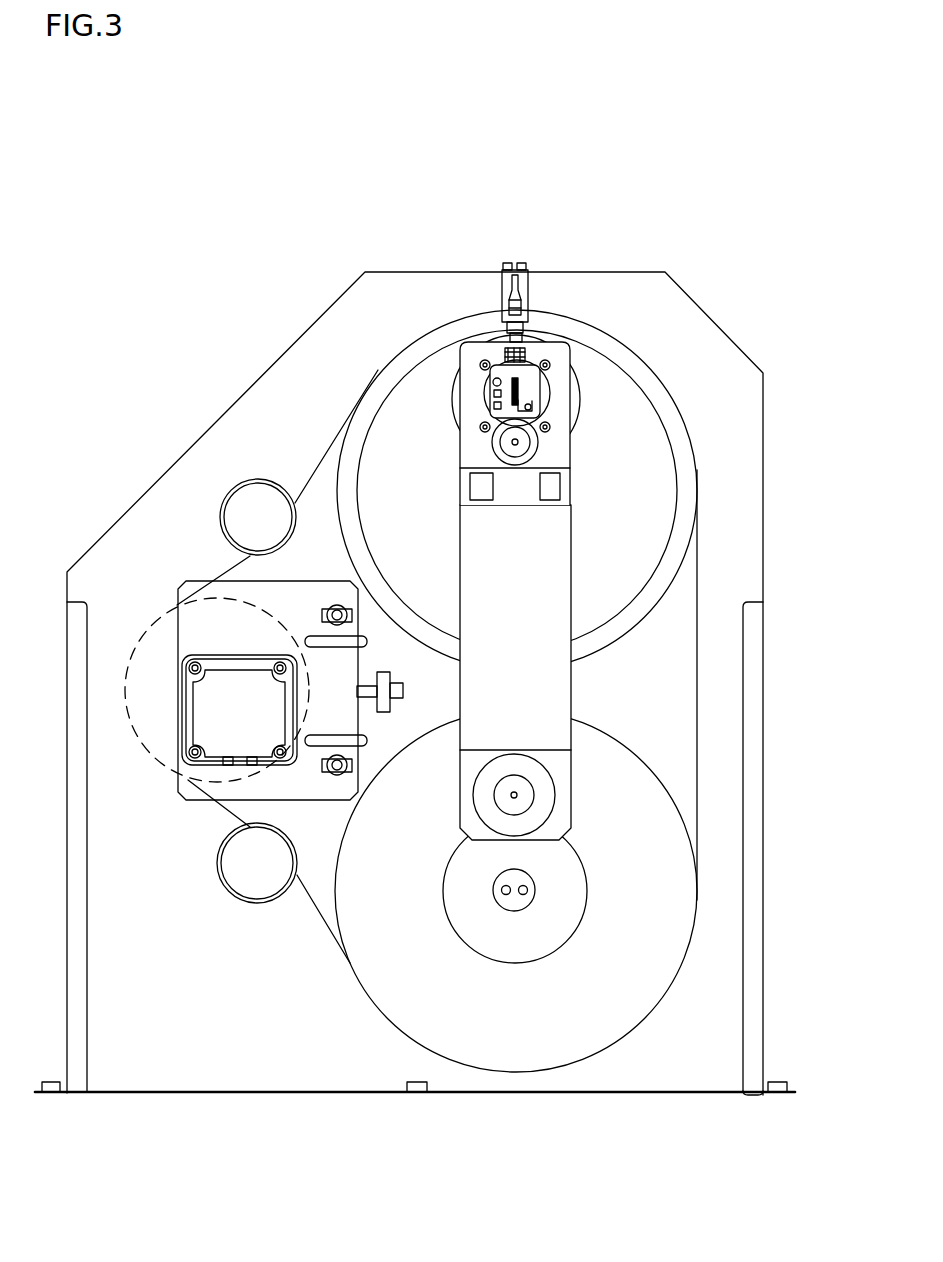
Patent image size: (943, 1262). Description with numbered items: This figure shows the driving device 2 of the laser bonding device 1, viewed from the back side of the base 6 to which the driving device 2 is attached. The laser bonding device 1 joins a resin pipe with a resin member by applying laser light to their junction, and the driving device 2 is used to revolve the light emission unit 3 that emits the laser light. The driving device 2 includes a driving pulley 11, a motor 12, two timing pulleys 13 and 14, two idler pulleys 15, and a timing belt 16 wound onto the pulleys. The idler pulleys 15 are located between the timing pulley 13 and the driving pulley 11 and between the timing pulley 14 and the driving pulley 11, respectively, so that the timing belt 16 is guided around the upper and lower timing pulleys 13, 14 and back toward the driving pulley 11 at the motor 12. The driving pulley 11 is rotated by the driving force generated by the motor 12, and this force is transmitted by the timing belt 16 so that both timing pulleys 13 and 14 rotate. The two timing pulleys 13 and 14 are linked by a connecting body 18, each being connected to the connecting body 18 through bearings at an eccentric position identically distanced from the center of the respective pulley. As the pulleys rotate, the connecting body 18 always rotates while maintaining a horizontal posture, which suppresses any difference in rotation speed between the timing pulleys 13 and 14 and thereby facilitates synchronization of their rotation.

The laser bonding device 1 is at (700, 233).
The driving device 2 is at (718, 383).
The light emission unit 3 is at (532, 385).
The base 6 is at (247, 1007).
The driving pulley 11 is at (157, 650).
The motor 12 is at (220, 715).
The timing pulley 13 is at (637, 533).
The timing pulley 14 is at (655, 965).
The idler pulley 15 is at (282, 523).
The timing belt 16 is at (315, 477).
The connecting body 18 is at (550, 687).